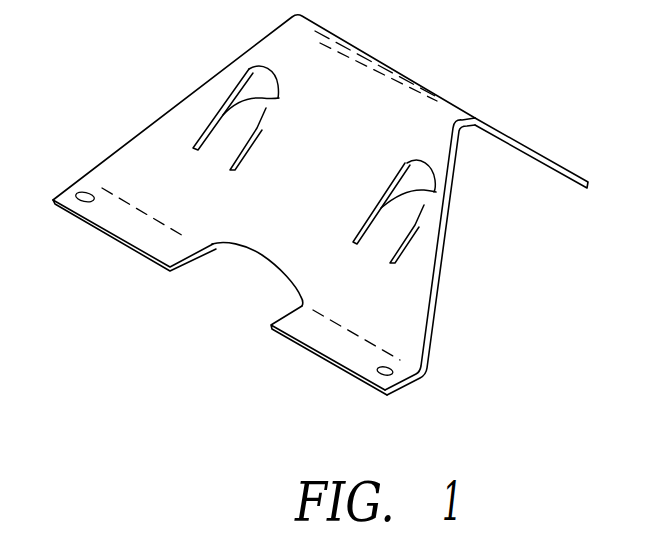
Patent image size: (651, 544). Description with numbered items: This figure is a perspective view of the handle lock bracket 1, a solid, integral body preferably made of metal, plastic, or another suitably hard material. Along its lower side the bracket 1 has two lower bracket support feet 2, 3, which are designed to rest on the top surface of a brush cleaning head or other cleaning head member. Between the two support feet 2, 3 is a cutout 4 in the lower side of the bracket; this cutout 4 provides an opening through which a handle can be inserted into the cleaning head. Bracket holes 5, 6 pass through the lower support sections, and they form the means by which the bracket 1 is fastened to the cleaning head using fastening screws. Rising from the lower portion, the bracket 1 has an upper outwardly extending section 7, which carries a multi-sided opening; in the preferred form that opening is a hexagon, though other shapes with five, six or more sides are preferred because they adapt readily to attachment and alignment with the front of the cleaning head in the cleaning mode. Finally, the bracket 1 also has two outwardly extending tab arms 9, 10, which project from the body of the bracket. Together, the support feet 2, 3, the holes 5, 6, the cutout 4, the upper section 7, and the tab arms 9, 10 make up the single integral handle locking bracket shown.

The handle lock bracket 1 is at (405, 307).
The lower bracket support foot 2 is at (130, 224).
The lower bracket support foot 3 is at (346, 347).
The cutout 4 is at (258, 272).
The bracket hole 5 is at (76, 200).
The bracket hole 6 is at (393, 372).
The upper outwardly extending section 7 is at (543, 153).
The tab arm 9 is at (253, 108).
The tab arm 10 is at (406, 206).